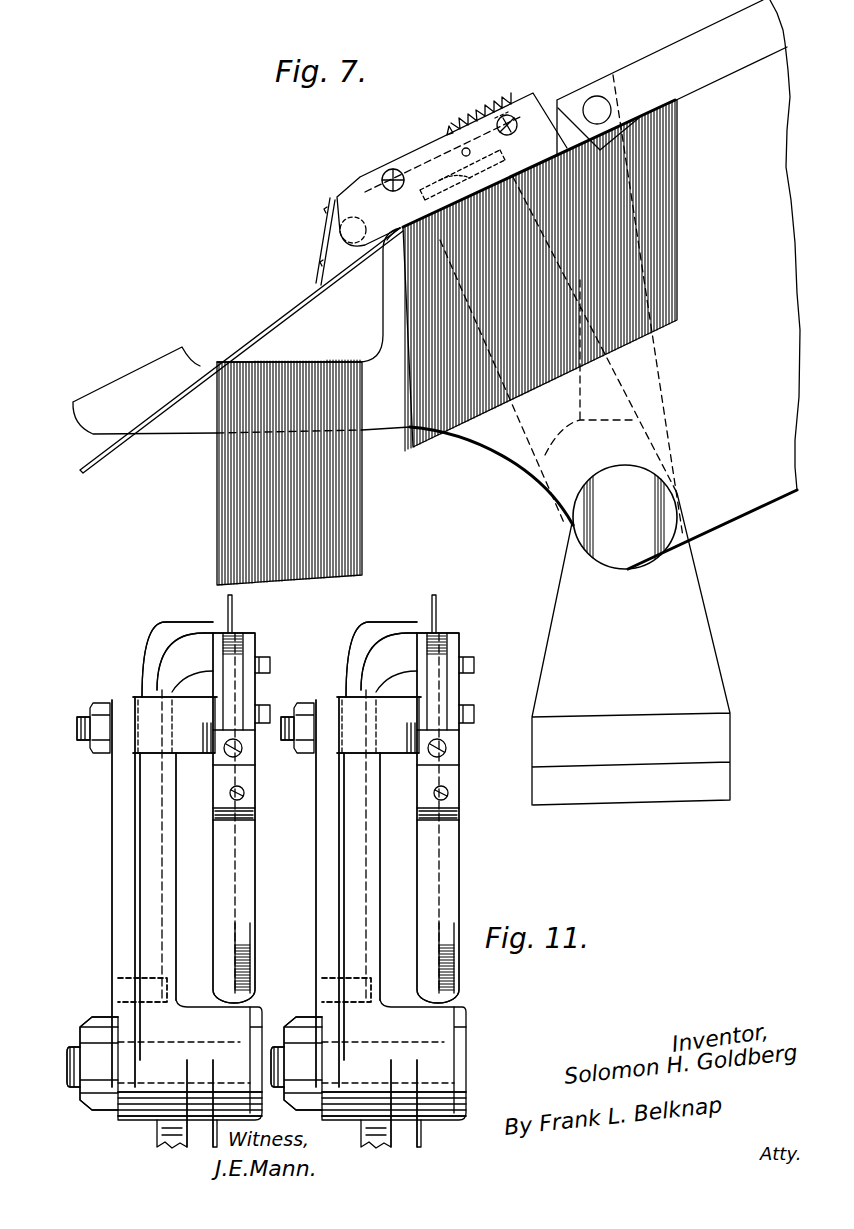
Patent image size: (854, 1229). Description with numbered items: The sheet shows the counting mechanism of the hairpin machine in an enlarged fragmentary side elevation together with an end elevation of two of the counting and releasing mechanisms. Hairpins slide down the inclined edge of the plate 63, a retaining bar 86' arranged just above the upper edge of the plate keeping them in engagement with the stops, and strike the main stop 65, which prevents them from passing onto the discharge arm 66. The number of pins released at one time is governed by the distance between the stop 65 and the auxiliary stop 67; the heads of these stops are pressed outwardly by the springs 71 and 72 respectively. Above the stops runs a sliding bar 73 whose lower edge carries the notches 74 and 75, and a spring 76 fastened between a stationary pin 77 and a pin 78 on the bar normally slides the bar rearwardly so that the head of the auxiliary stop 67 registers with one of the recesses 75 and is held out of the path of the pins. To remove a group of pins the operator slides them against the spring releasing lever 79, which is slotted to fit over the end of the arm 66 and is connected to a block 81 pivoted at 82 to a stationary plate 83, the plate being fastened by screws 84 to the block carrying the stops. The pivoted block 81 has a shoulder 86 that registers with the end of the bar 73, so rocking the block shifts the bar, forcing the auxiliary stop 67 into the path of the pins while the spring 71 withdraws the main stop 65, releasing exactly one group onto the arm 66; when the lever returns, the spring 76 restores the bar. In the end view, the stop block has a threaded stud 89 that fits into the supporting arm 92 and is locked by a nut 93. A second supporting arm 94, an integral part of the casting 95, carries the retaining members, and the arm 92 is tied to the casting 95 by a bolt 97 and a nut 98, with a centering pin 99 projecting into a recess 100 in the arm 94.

In FIG. 7, the plate 63 is at (740, 493).
In FIG. 7, the stop 65 is at (387, 242).
In FIG. 7, the discharge arm 66 is at (187, 367).
In FIG. 7, the auxiliary stop 67 is at (547, 143).
In FIG. 7, the spring 71 is at (348, 280).
In FIG. 7, the spring 72 is at (634, 306).
In FIG. 7, the sliding bar 73 is at (440, 150).
In FIG. 7, the notches 74 is at (380, 200).
In FIG. 7, the notches 75 is at (515, 113).
In FIG. 7, the spring 76 is at (470, 115).
In FIG. 11, the spring 76 is at (255, 868).
In FIG. 7, the stationary pin 77 is at (450, 128).
In FIG. 7, the pin 78 is at (500, 118).
In FIG. 7, the spring releasing lever 79 is at (247, 333).
In FIG. 7, the block 81 is at (338, 242).
In FIG. 7, the pivot 82 is at (330, 218).
In FIG. 7, the stationary plate 83 is at (440, 177).
In FIG. 7, the screws 84 is at (479, 161).
In FIG. 7, the shoulder 86 is at (450, 169).
In FIG. 11, the shoulder 86 is at (262, 664).
In FIG. 7, the retaining bar 86' is at (672, 77).
In FIG. 11, the threaded stud 89 is at (84, 742).
In FIG. 7, the arm 92 is at (520, 452).
In FIG. 11, the arm 92 is at (118, 822).
In FIG. 7, the nut 93 is at (289, 472).
In FIG. 11, the nut 93 is at (104, 755).
In FIG. 7, the supporting arm 94 is at (663, 380).
In FIG. 11, the supporting arm 94 is at (177, 917).
In FIG. 11, the casting 95 is at (153, 1068).
In FIG. 7, the bolt 97 is at (657, 533).
In FIG. 11, the bolt 97 is at (70, 1047).
In FIG. 11, the nut 98 is at (95, 1017).
In FIG. 11, the centering pin 99 is at (130, 978).
In FIG. 11, the recess 100 is at (167, 980).